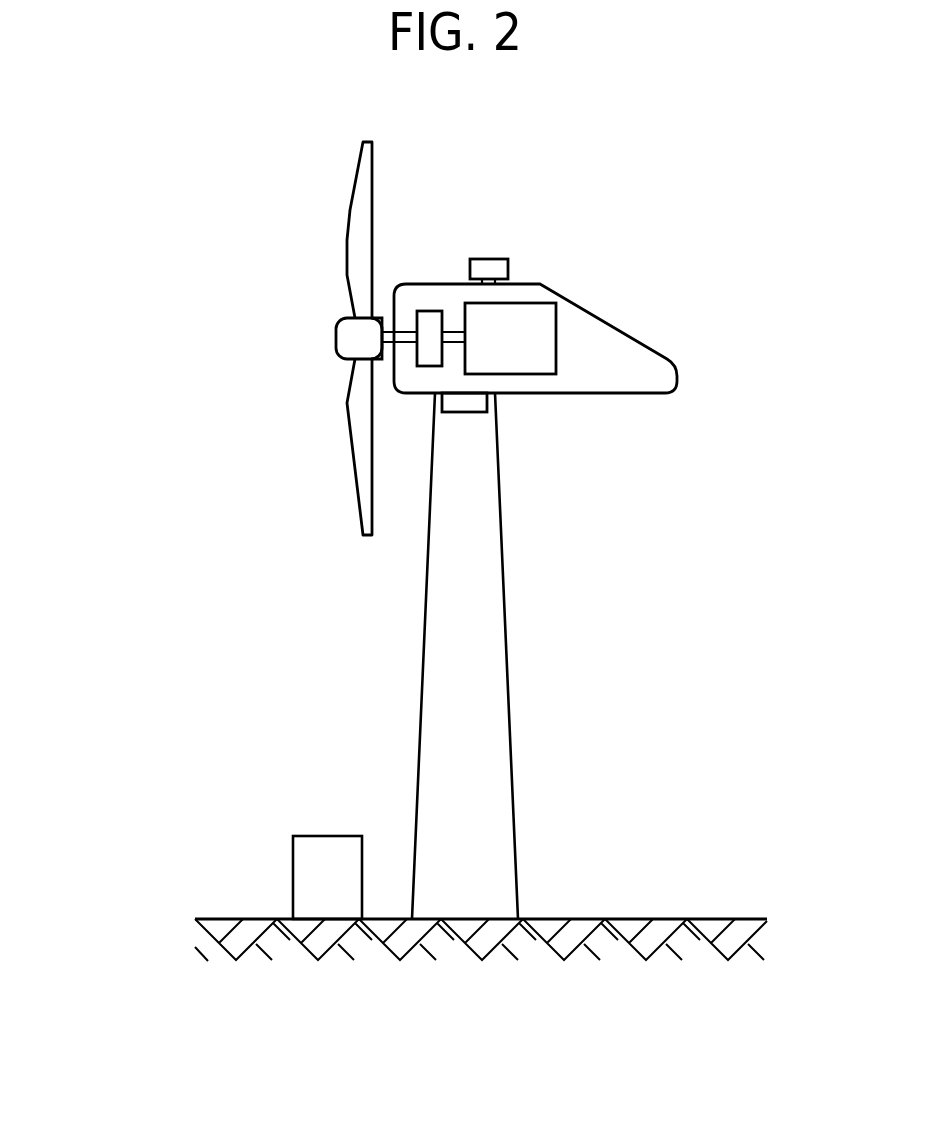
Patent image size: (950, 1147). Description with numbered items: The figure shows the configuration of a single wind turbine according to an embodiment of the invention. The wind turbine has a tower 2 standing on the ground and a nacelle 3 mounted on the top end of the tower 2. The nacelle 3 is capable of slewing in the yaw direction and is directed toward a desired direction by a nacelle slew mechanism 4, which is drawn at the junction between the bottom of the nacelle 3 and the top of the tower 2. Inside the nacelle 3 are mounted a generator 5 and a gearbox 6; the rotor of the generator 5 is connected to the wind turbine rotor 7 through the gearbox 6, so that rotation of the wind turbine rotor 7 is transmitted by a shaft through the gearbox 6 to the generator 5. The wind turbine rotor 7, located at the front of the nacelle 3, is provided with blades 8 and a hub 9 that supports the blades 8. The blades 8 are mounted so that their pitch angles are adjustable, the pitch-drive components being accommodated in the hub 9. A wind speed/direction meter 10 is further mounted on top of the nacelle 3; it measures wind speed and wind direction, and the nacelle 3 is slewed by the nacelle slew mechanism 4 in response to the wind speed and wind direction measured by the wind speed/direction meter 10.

The tower 2 is at (507, 697).
The nacelle 3 is at (626, 333).
The nacelle slew mechanism 4 is at (467, 413).
The generator 5 is at (532, 303).
The gearbox 6 is at (428, 311).
The wind turbine rotor 7 is at (305, 260).
The blade 8 is at (352, 210).
The hub 9 is at (342, 342).
The wind speed/direction meter 10 is at (489, 258).